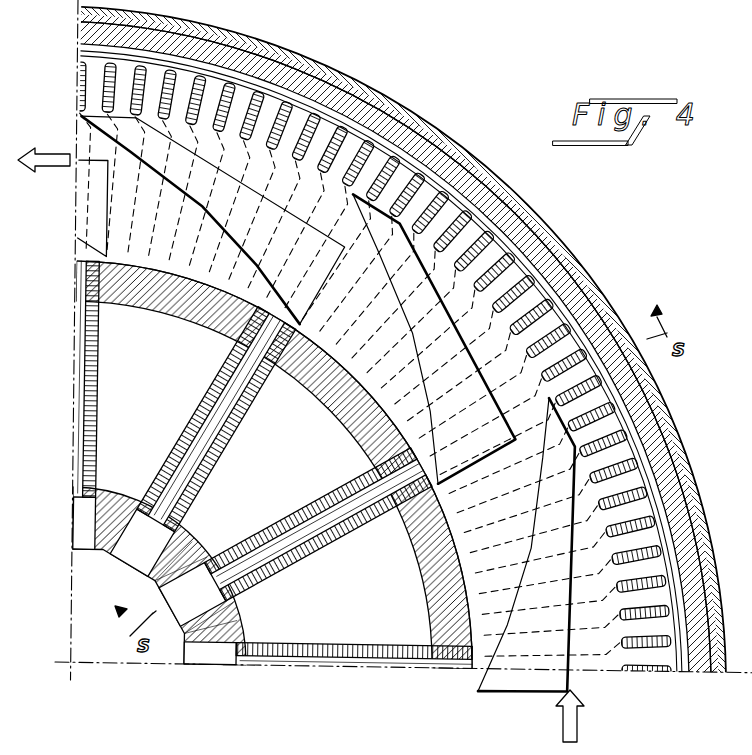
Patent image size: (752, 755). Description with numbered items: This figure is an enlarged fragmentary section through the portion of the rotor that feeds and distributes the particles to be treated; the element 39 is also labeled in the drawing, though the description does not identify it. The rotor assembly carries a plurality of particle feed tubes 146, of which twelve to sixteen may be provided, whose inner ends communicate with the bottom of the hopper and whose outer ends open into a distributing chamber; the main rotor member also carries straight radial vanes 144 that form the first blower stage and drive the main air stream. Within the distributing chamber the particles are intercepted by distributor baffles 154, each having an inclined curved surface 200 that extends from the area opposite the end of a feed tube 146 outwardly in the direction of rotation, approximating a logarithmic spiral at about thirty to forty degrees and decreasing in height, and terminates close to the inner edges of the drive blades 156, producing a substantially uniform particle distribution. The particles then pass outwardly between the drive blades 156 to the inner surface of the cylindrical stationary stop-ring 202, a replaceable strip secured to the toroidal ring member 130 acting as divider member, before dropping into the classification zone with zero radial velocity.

The toroidal ring member 130 is at (600, 292).
The stop-ring 202 is at (450, 148).
The stator core 39 is at (662, 444).
The drive blades 156 is at (492, 244).
The distributor baffles 154 is at (222, 212).
The inclined curved surface 200 is at (98, 218).
The particle feed tubes 146 is at (177, 440).
The straight radial vanes 144 is at (273, 508).